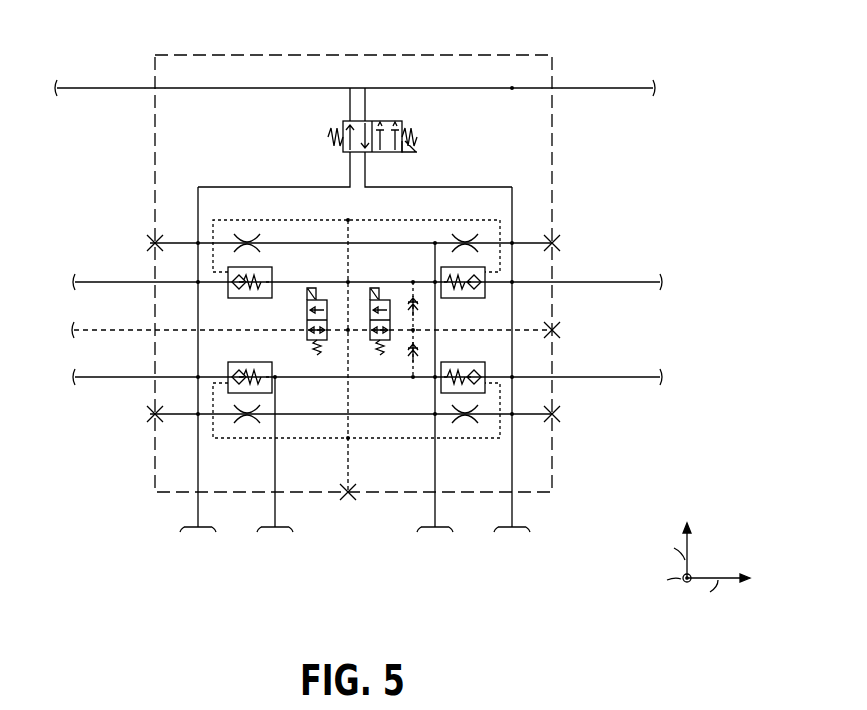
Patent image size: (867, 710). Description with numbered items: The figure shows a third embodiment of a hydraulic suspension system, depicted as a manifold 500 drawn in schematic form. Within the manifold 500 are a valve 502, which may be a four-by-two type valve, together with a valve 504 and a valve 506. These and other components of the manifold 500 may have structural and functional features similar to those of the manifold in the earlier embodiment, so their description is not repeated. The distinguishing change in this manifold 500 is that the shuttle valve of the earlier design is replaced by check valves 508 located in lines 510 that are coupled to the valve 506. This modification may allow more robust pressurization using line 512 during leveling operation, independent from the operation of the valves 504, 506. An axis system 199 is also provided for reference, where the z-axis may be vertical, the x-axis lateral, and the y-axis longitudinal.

The manifold 500 is at (160, 55).
The valve 502 is at (320, 136).
The valve 504 is at (302, 313).
The valve 506 is at (377, 360).
The check valves 508 is at (421, 310).
The lines 510 is at (410, 281).
The line 512 is at (93, 329).
The axis system 199 is at (722, 555).